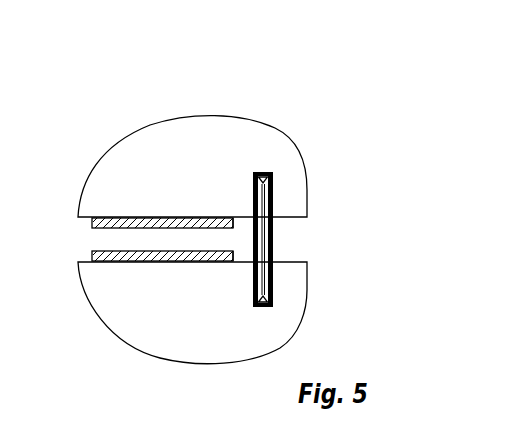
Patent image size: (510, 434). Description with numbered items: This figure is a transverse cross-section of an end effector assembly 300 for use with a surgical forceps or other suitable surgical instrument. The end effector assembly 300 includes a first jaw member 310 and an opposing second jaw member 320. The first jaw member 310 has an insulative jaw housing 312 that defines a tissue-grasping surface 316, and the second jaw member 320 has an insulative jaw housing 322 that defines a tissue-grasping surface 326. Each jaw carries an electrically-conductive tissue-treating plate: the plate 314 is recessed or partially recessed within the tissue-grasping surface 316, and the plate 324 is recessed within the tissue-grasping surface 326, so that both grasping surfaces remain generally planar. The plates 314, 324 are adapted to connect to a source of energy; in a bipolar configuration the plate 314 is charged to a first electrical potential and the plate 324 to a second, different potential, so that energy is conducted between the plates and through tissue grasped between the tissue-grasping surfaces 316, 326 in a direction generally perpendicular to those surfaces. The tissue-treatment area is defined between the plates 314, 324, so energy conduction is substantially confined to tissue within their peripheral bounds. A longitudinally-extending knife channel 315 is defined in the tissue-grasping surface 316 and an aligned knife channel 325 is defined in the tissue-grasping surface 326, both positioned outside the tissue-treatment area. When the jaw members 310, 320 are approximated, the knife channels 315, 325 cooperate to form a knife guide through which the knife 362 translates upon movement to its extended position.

The end effector assembly 300 is at (186, 220).
The first jaw member 310 is at (177, 143).
The insulative jaw housing 312 is at (215, 117).
The tissue-treating plate 314 is at (207, 217).
The knife channel 315 is at (273, 193).
The tissue-grasping surface 316 is at (241, 223).
The second jaw member 320 is at (186, 334).
The insulative jaw housing 322 is at (287, 322).
The tissue-treating plate 324 is at (130, 262).
The knife channel 325 is at (274, 281).
The tissue-grasping surface 326 is at (241, 256).
The knife 362 is at (266, 240).